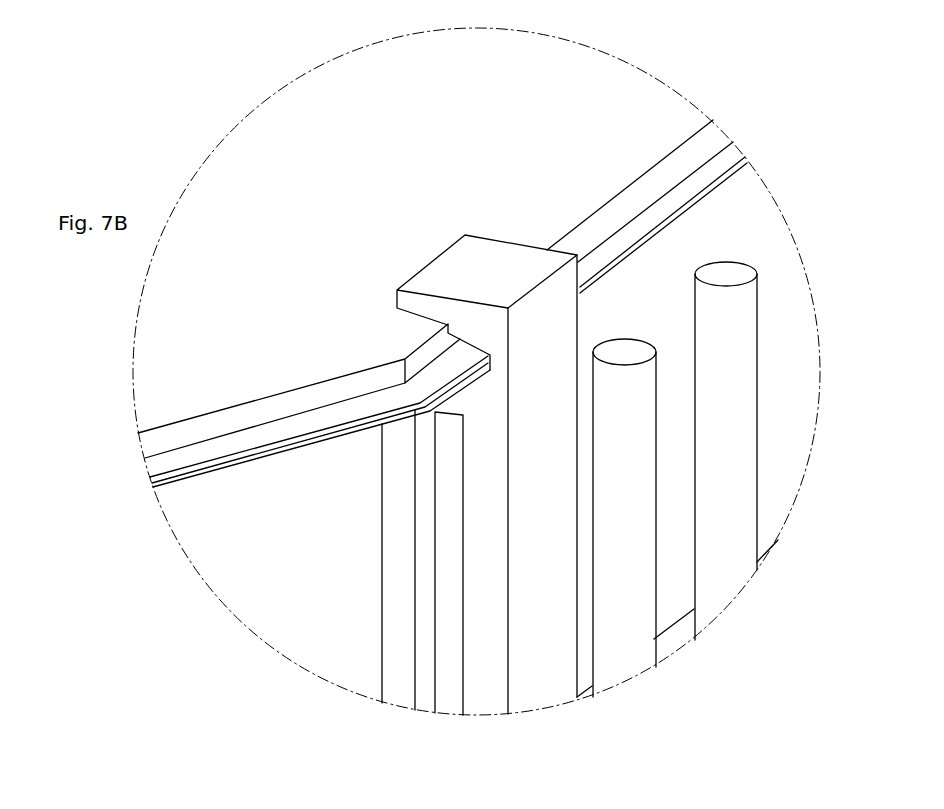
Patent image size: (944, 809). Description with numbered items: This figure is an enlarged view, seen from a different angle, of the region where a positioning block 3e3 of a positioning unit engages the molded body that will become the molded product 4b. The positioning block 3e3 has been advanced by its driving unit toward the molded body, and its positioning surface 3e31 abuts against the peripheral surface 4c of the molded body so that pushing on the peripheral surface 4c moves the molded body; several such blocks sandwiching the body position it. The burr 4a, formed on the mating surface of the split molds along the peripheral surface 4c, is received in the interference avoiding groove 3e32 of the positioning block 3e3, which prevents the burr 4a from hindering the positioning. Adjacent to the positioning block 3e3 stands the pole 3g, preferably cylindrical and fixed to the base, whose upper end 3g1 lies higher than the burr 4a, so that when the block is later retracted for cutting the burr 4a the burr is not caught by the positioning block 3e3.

The positioning block 3e3 is at (542, 700).
The positioning surface 3e31 is at (450, 332).
The interference avoiding groove 3e32 is at (492, 365).
The pole 3g is at (743, 387).
The upper end 3g1 is at (735, 267).
The burr 4a is at (717, 160).
The molded product 4b is at (260, 145).
The peripheral surface 4c is at (713, 133).